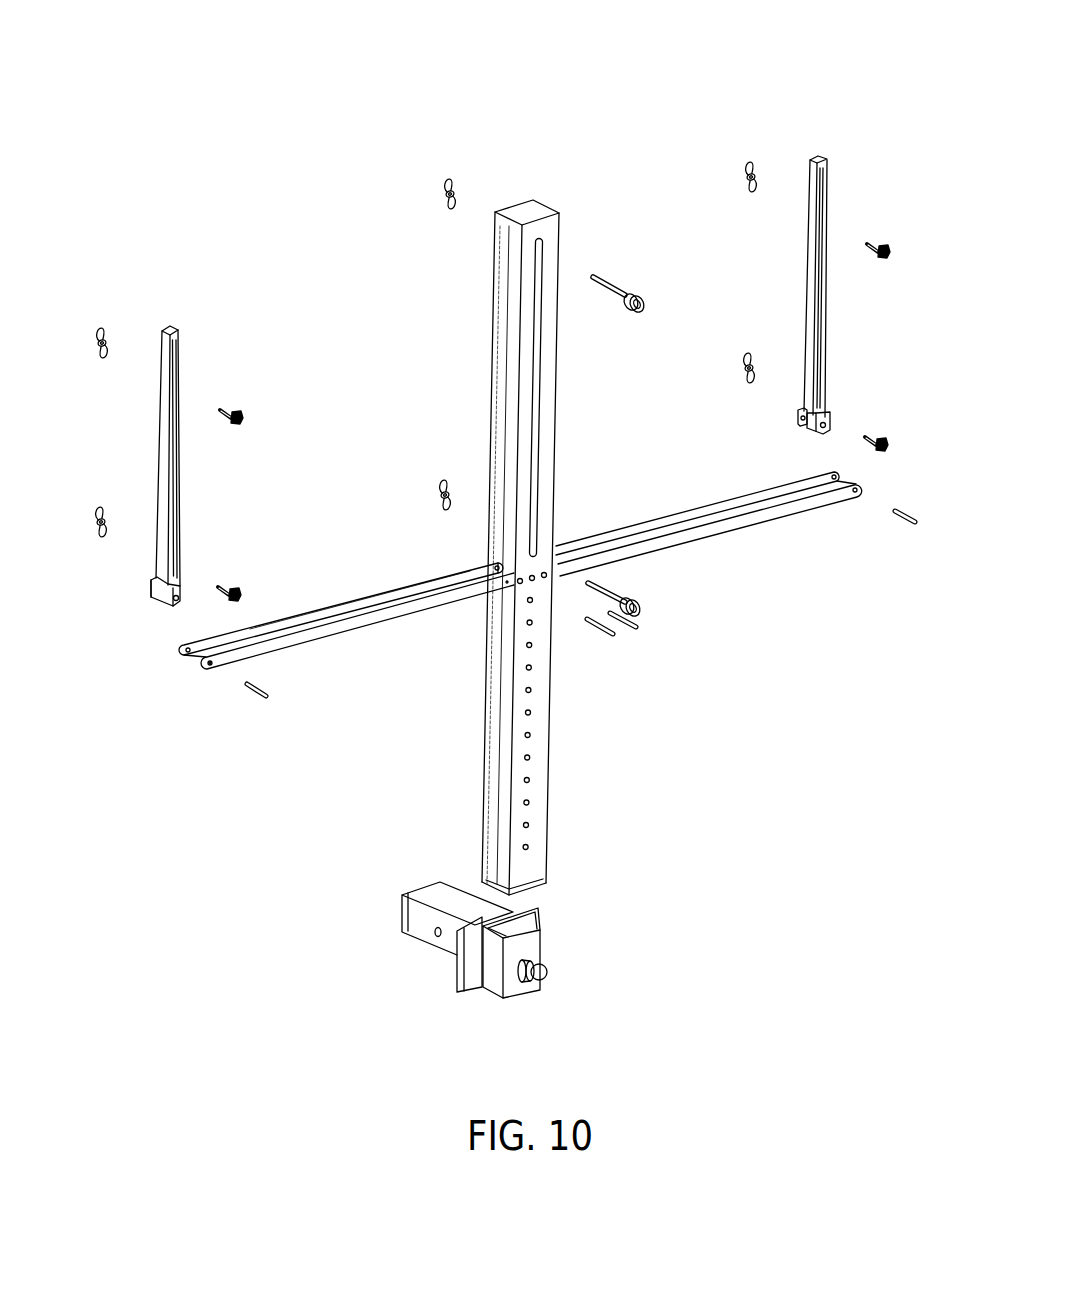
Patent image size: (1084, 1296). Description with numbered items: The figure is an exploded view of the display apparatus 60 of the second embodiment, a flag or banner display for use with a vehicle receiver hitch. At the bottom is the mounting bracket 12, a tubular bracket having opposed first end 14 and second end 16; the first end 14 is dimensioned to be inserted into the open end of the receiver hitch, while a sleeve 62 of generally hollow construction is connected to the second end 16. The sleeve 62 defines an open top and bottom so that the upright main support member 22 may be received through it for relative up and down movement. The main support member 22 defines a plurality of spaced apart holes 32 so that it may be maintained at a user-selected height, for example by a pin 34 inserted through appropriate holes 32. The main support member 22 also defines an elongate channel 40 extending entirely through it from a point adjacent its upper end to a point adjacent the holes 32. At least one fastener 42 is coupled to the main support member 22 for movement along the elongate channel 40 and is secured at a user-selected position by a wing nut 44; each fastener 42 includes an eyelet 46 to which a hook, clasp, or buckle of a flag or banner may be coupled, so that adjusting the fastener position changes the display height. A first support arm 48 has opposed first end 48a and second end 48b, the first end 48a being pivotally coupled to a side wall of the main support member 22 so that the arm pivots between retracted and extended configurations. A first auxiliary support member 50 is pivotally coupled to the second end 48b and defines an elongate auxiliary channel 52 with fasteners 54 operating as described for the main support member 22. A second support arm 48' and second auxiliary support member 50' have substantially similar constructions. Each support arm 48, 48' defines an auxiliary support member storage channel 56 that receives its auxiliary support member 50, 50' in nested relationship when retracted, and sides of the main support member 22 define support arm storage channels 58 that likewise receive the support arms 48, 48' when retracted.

The mounting bracket 12 is at (415, 960).
The first end 14 is at (432, 892).
The second end 16 is at (452, 983).
The main support member 22 is at (470, 732).
The holes 32 is at (534, 735).
The pin 34 is at (548, 972).
The elongate channel 40 is at (550, 418).
The fastener 42 is at (616, 276).
The wing nut 44 is at (443, 188).
The eyelet 46 is at (645, 302).
The first support arm 48 is at (346, 633).
The second support arm 48' is at (709, 531).
The first end 48a is at (507, 582).
The second end 48b is at (211, 666).
The first auxiliary support member 50 is at (137, 466).
The second auxiliary support member 50' is at (789, 295).
The elongate auxiliary channel 52 is at (181, 450).
The fasteners 54 is at (232, 406).
The auxiliary support member storage channel 56 is at (343, 606).
The support arm storage channel 58 is at (512, 304).
The display apparatus 60 is at (658, 98).
The sleeve 62 is at (538, 942).